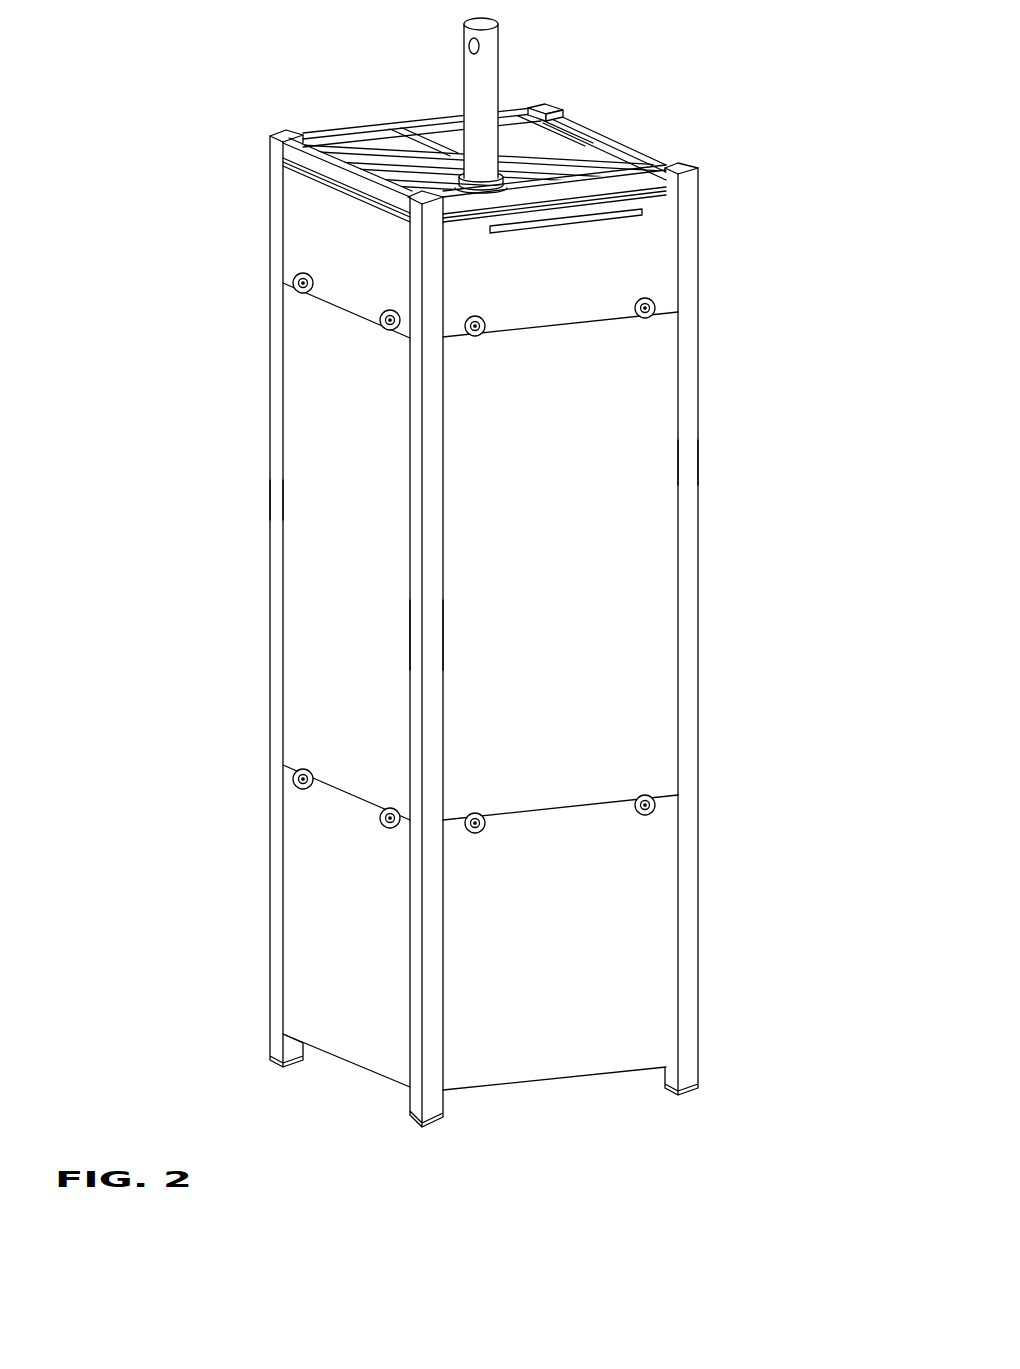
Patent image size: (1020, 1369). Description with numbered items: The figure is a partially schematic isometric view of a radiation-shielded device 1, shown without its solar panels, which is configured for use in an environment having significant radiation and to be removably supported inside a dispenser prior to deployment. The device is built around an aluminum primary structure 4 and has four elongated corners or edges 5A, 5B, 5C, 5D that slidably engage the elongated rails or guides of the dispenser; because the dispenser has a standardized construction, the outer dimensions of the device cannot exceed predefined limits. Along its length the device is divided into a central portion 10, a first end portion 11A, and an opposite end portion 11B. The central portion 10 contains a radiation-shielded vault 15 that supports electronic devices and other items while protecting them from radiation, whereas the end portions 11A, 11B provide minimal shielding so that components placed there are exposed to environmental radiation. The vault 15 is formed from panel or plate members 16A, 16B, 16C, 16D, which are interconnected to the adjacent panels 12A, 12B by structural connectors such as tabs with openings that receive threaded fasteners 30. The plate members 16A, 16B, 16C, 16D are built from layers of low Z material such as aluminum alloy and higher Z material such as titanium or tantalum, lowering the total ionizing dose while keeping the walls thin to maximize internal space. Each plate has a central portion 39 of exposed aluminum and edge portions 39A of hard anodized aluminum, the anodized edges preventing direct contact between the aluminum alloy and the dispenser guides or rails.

The radiation-shielded device 1 is at (708, 520).
The primary structure 4 is at (698, 612).
The elongated corner or edge 5A is at (268, 168).
The elongated corner or edge 5B is at (422, 648).
The elongated corner or edge 5C is at (698, 287).
The elongated corner or edge 5D is at (567, 115).
The central portion 10 is at (615, 660).
The first end portion 11A is at (657, 258).
The opposite end portion 11B is at (625, 885).
The adjacent panel 12A is at (311, 221).
The adjacent panel 12B is at (343, 1027).
The radiation-shielded vault 15 is at (600, 705).
The panel or plate member 16A is at (342, 643).
The panel or plate member 16B is at (623, 560).
The panel or plate member 16C is at (698, 462).
The panel or plate member 16D is at (268, 498).
The threaded fastener 30 is at (298, 292).
The central portion 39 is at (358, 546).
The edge portion 39A is at (415, 605).